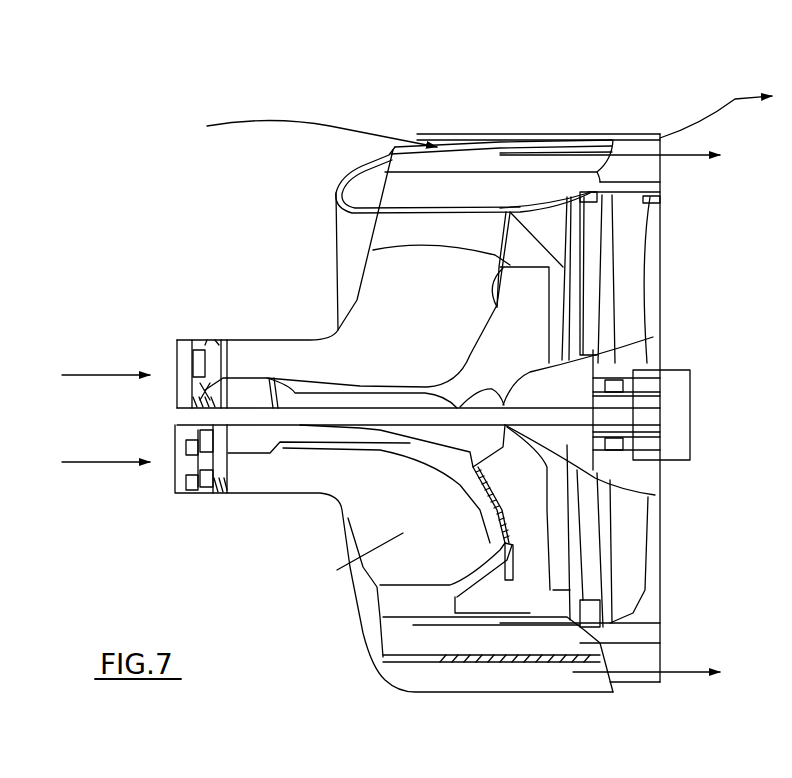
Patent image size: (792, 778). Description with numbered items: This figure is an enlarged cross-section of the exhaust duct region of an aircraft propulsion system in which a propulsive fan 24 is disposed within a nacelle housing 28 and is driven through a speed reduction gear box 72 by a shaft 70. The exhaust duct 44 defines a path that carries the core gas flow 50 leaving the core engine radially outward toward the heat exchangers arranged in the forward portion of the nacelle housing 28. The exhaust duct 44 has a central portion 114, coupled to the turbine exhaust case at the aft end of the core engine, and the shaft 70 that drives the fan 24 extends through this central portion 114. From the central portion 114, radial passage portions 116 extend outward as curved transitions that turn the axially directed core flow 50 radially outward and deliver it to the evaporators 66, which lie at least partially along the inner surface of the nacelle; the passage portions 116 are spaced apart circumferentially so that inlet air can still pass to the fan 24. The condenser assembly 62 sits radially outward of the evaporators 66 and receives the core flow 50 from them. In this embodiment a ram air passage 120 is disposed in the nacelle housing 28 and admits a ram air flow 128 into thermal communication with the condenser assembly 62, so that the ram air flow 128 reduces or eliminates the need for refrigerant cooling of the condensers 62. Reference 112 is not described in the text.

The propulsive fan 24 is at (627, 535).
The nacelle housing 28 is at (357, 172).
The exhaust duct 44 is at (345, 527).
The core gas flow 50 is at (692, 157).
The condenser assembly 62 is at (437, 678).
The evaporators 66 is at (400, 640).
The shaft 70 is at (337, 420).
The speed reduction gear box 72 is at (680, 397).
The inlet 112 is at (367, 217).
The central portion 114 is at (280, 357).
The radial passage portions 116 is at (387, 290).
The ram air passage 120 is at (488, 122).
The ram air flow 128 is at (730, 88).